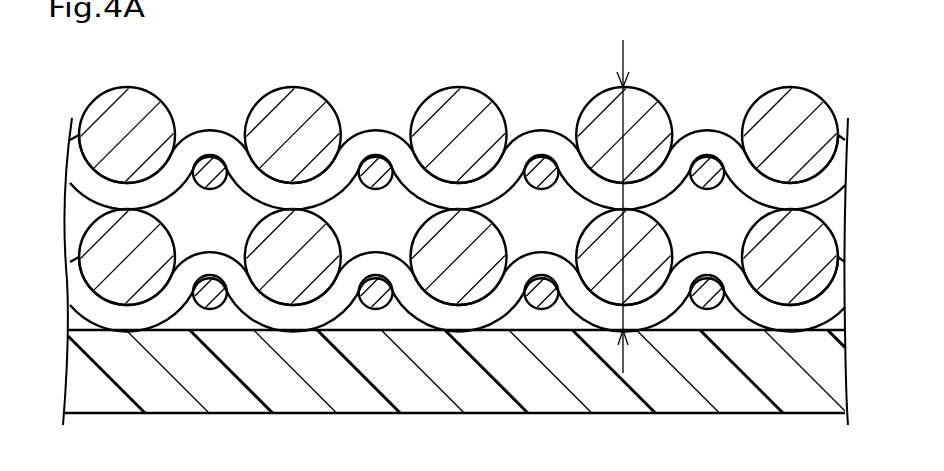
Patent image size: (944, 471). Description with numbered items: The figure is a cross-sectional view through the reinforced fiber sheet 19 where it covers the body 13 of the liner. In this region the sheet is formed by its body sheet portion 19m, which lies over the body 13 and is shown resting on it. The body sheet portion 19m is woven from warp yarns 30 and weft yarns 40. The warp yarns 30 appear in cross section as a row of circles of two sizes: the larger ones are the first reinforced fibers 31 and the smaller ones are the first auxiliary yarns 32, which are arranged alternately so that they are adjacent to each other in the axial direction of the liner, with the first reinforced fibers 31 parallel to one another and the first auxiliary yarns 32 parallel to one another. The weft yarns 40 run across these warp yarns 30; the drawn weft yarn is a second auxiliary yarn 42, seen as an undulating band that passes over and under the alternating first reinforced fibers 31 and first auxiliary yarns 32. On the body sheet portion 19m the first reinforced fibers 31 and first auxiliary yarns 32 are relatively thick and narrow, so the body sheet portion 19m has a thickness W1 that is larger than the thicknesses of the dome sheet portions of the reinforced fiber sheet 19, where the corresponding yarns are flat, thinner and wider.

The body 13 is at (808, 392).
The reinforced fiber sheet 19 is at (468, 169).
The body sheet portion 19m is at (762, 98).
The warp yarns 30 is at (468, 171).
The first reinforced fibers 31 is at (453, 120).
The first auxiliary yarns 32 is at (537, 157).
The weft yarns 40 is at (457, 195).
The second auxiliary yarns 42 is at (368, 145).
The thickness of the body sheet portion W1 is at (625, 113).